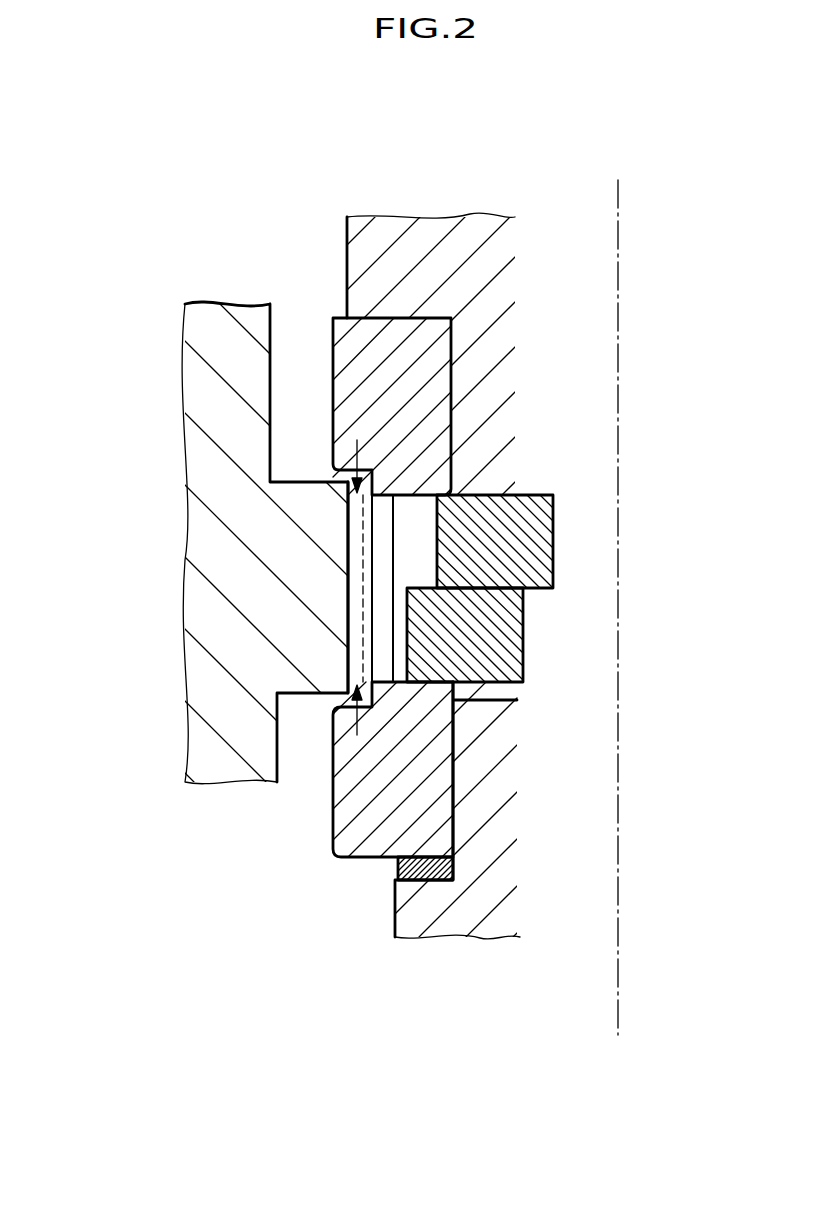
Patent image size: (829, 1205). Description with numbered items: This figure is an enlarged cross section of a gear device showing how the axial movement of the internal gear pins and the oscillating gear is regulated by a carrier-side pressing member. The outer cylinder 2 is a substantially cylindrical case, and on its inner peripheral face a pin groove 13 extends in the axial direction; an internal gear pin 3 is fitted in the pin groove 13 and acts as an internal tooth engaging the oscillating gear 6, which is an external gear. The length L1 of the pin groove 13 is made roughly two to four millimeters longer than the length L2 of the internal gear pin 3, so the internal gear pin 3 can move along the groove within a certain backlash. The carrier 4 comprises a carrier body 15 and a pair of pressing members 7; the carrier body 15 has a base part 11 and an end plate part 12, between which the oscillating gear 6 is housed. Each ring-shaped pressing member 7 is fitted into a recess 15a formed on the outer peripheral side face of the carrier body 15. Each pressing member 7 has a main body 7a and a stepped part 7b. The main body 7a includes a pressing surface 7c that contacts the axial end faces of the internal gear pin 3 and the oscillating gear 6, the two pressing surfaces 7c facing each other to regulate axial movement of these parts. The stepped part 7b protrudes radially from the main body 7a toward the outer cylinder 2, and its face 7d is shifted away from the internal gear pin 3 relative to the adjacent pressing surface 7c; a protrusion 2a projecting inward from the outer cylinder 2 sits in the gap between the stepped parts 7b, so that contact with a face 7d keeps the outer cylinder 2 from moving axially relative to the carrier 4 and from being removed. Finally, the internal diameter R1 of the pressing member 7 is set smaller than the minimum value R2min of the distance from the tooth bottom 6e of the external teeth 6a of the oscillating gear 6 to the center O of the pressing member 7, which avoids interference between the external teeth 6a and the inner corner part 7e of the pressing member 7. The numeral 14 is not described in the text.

The outer cylinder 2 is at (205, 605).
The protrusion 2a is at (302, 695).
The internal gear pin 3 is at (393, 574).
The carrier 4 is at (465, 191).
The oscillating gear 6 is at (520, 605).
The external teeth 6a is at (395, 553).
The tooth bottom 6e is at (445, 497).
The pressing member 7 is at (336, 352).
The main body 7a is at (452, 440).
The stepped part 7b is at (343, 466).
The pressing surface 7c is at (557, 657).
The face 7d is at (348, 487).
The inner corner part 7e is at (448, 504).
The base part 11 is at (374, 222).
The end plate part 12 is at (498, 905).
The pin groove 13 is at (376, 507).
The spacer 14 is at (428, 880).
The carrier body 15 is at (506, 207).
The recess 15a is at (428, 316).
The length of the pin groove L1 is at (316, 468).
The length of the internal gear pin L2 is at (425, 400).
The internal diameter of the pressing member R1 is at (468, 727).
The minimum value of the distance from the tooth bottom to the center R2min is at (452, 540).
The center of the pressing member O is at (622, 1015).